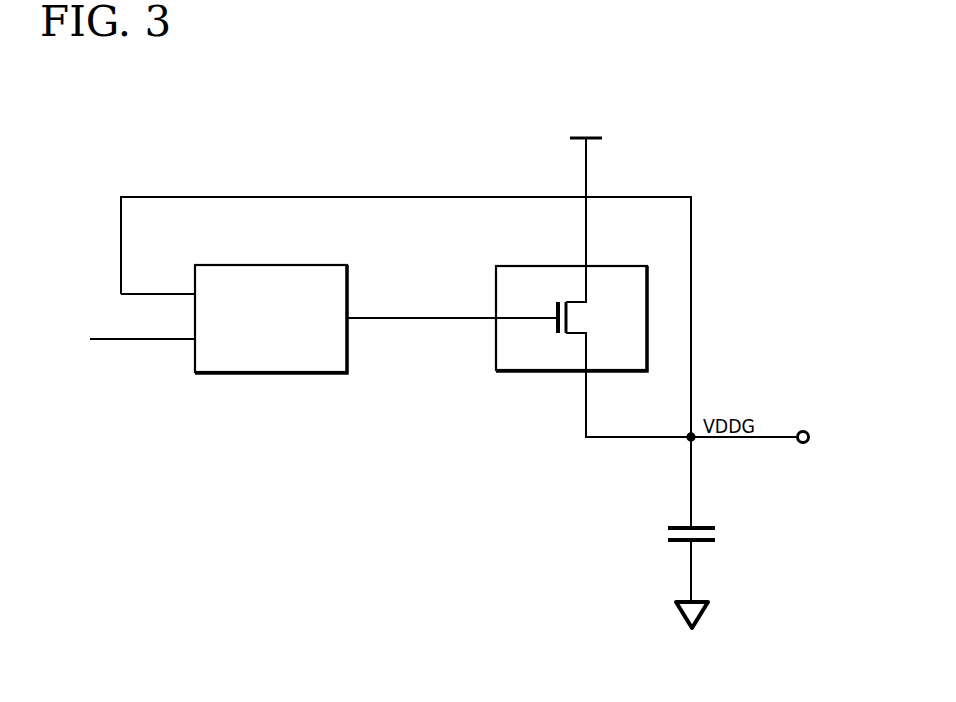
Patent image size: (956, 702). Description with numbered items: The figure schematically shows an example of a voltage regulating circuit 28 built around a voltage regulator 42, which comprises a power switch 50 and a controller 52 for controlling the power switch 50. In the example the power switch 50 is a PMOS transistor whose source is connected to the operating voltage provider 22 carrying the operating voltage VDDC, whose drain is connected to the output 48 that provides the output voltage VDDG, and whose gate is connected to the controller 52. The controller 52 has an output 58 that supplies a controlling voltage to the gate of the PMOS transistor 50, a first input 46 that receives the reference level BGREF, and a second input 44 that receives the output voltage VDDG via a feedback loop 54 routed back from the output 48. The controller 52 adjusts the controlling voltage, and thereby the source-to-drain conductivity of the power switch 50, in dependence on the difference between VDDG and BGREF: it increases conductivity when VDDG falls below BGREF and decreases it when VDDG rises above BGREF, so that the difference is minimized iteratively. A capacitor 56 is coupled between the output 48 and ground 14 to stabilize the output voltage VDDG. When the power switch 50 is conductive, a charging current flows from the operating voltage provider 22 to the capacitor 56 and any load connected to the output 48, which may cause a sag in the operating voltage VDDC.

The voltage regulating circuit 28 is at (287, 141).
The operating voltage provider 22 is at (600, 139).
The feedback loop 54 is at (692, 246).
The second input 44 is at (194, 293).
The first input 46 is at (194, 342).
The controller 52 is at (284, 357).
The output 58 is at (349, 316).
The power switch 50 is at (495, 278).
The output 48 is at (589, 374).
The voltage regulator 42 is at (325, 375).
The capacitor 56 is at (704, 522).
The ground 14 is at (692, 572).